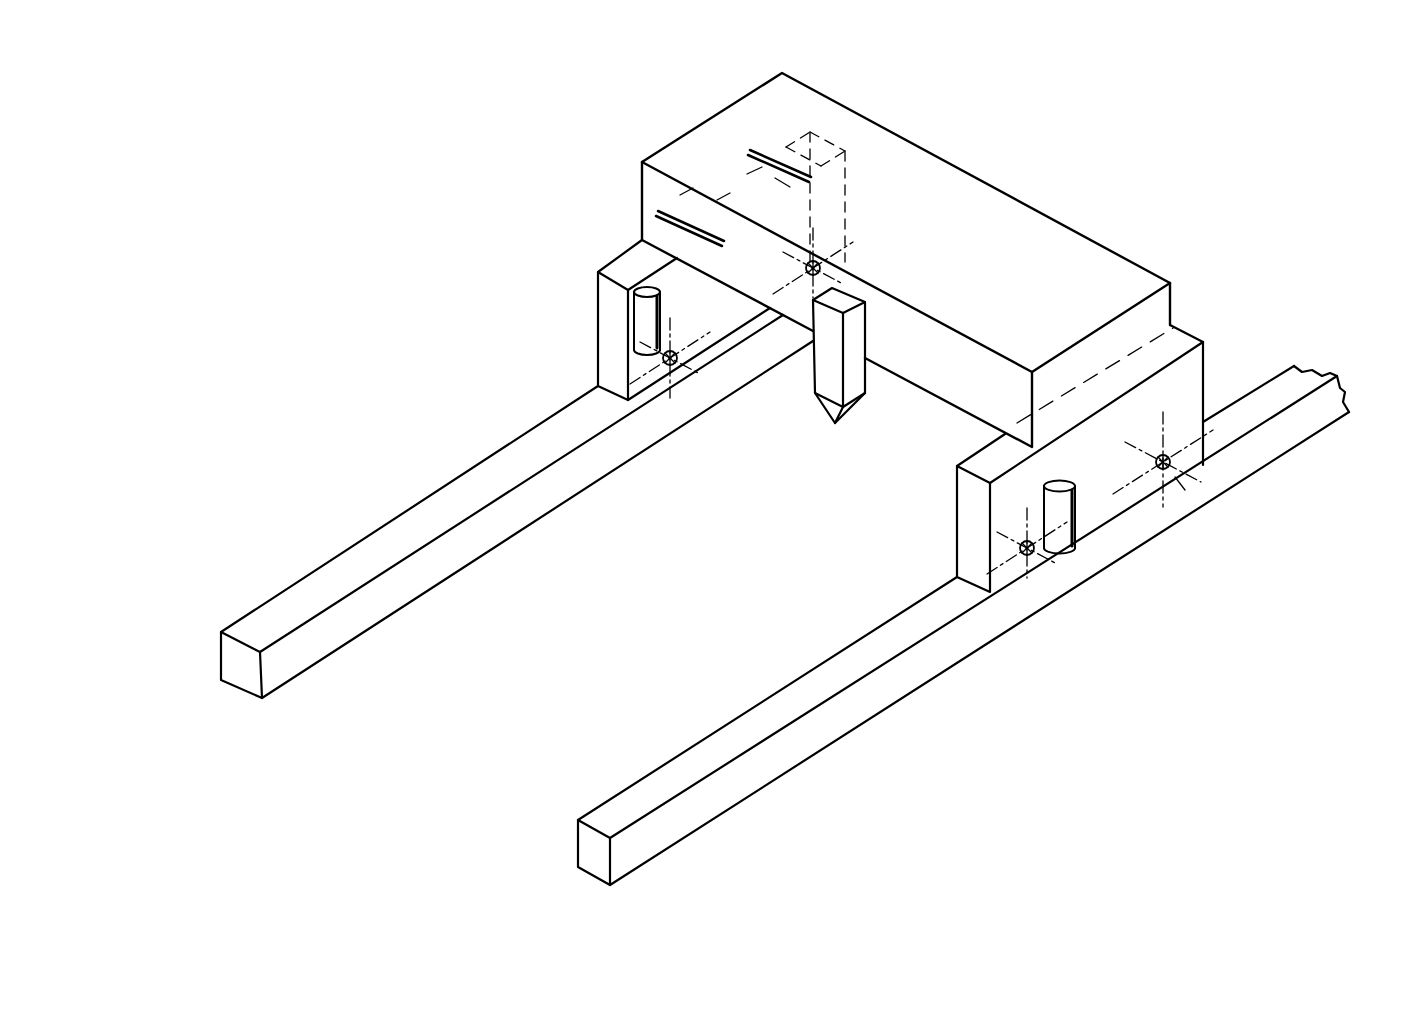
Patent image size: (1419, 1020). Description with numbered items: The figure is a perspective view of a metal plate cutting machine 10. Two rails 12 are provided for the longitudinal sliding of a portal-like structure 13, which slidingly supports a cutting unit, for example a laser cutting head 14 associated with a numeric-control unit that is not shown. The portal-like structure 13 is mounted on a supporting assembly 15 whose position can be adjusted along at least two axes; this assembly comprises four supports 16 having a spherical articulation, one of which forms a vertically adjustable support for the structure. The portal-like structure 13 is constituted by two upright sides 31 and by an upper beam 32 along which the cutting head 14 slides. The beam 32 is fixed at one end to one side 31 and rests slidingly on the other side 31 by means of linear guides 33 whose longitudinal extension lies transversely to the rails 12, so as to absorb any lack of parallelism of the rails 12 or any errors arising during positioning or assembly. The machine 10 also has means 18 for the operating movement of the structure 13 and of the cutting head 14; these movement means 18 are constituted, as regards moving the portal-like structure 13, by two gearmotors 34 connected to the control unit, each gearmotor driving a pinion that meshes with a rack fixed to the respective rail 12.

The metal plate cutting machine 10 is at (500, 163).
The rails 12 is at (295, 588).
The portal-like structure 13 is at (1036, 178).
The laser cutting head 14 is at (852, 337).
The supporting assembly 15 is at (1195, 508).
The supports 16 is at (663, 360).
The means for the operating movement 18 is at (607, 320).
The upright sides 31 is at (690, 291).
The upper beam 32 is at (902, 152).
The linear guides 33 is at (767, 153).
The gearmotors 34 is at (647, 291).